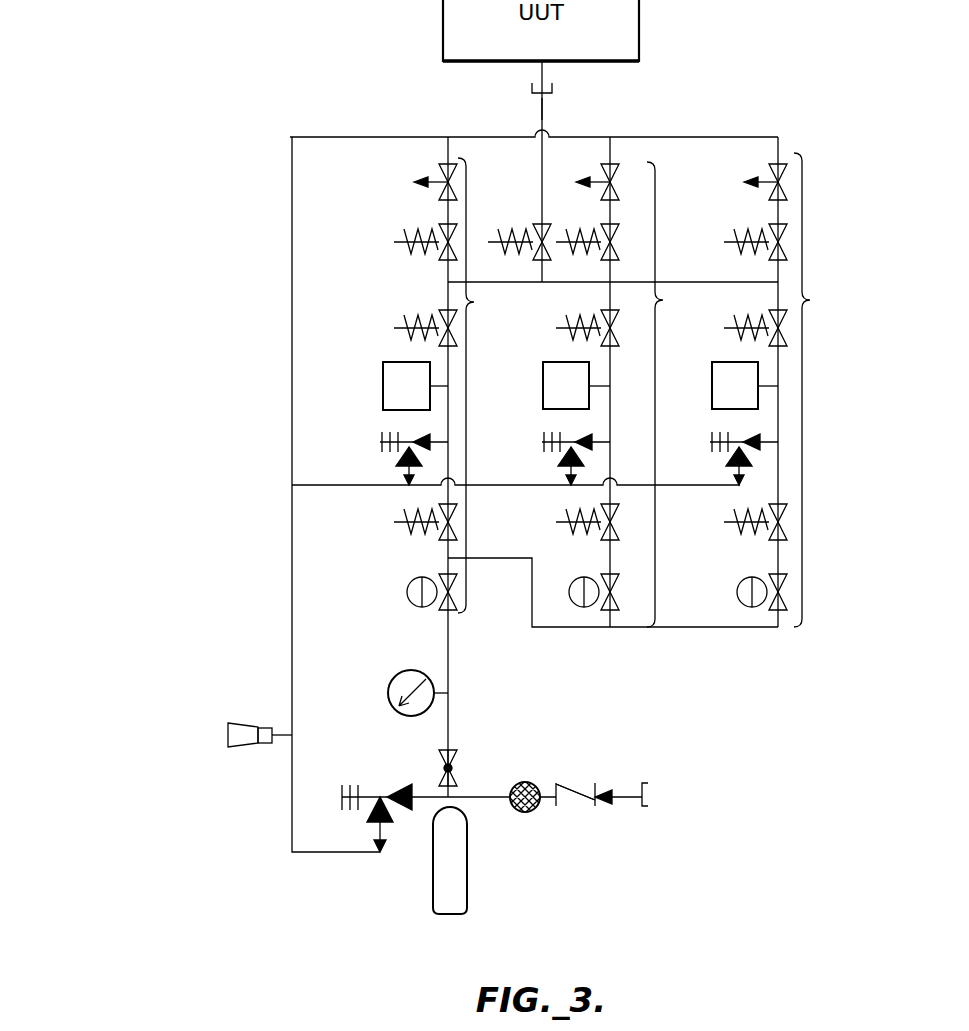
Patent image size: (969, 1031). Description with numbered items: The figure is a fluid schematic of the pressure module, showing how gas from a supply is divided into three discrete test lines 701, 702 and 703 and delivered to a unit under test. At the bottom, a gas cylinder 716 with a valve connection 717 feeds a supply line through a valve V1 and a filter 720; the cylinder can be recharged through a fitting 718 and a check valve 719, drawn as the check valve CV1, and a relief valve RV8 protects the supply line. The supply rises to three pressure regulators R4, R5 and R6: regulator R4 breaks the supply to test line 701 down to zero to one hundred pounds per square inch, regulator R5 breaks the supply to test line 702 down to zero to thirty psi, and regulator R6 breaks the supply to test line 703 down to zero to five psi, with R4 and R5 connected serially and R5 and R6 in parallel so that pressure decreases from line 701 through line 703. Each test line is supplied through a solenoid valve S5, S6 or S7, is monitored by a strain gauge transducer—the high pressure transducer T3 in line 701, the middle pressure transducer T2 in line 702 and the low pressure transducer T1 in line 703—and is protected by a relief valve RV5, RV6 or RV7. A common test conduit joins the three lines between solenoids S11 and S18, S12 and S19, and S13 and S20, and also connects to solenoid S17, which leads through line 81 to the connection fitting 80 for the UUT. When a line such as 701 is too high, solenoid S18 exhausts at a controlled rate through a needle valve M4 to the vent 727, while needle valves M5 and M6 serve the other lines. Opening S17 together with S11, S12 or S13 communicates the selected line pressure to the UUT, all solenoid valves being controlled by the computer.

The connection fitting 80 is at (553, 88).
The line 81 is at (541, 116).
The test line 701 is at (487, 385).
The test line 702 is at (675, 394).
The test line 703 is at (824, 390).
The gas cylinder 716 is at (462, 857).
The valve connection 717 is at (458, 758).
The fitting 718 is at (648, 785).
The check valve 719 is at (583, 796).
The filter 720 is at (514, 782).
The vent 727 is at (243, 727).
The needle valve M4 is at (417, 182).
The needle valve M5 is at (580, 182).
The needle valve M6 is at (747, 182).
The solenoid valve S18 is at (409, 242).
The solenoid valve S17 is at (510, 242).
The solenoid valve S19 is at (606, 242).
The solenoid valve S20 is at (739, 242).
The solenoid valve S11 is at (413, 328).
The solenoid valve S12 is at (575, 328).
The solenoid valve S13 is at (742, 328).
The solenoid valve S5 is at (415, 522).
The solenoid valve S6 is at (578, 522).
The solenoid valve S7 is at (744, 522).
The high pressure transducer T3 is at (399, 386).
The middle pressure transducer T2 is at (561, 385).
The low pressure transducer T1 is at (732, 385).
The relief valve RV5 is at (391, 458).
The relief valve RV6 is at (553, 458).
The relief valve RV7 is at (720, 458).
The relief valve RV8 is at (355, 804).
The pressure regulator R4 is at (415, 592).
The pressure regulator R5 is at (578, 592).
The pressure regulator R6 is at (745, 592).
The valve V1 is at (463, 768).
The check valve CV1 is at (591, 782).